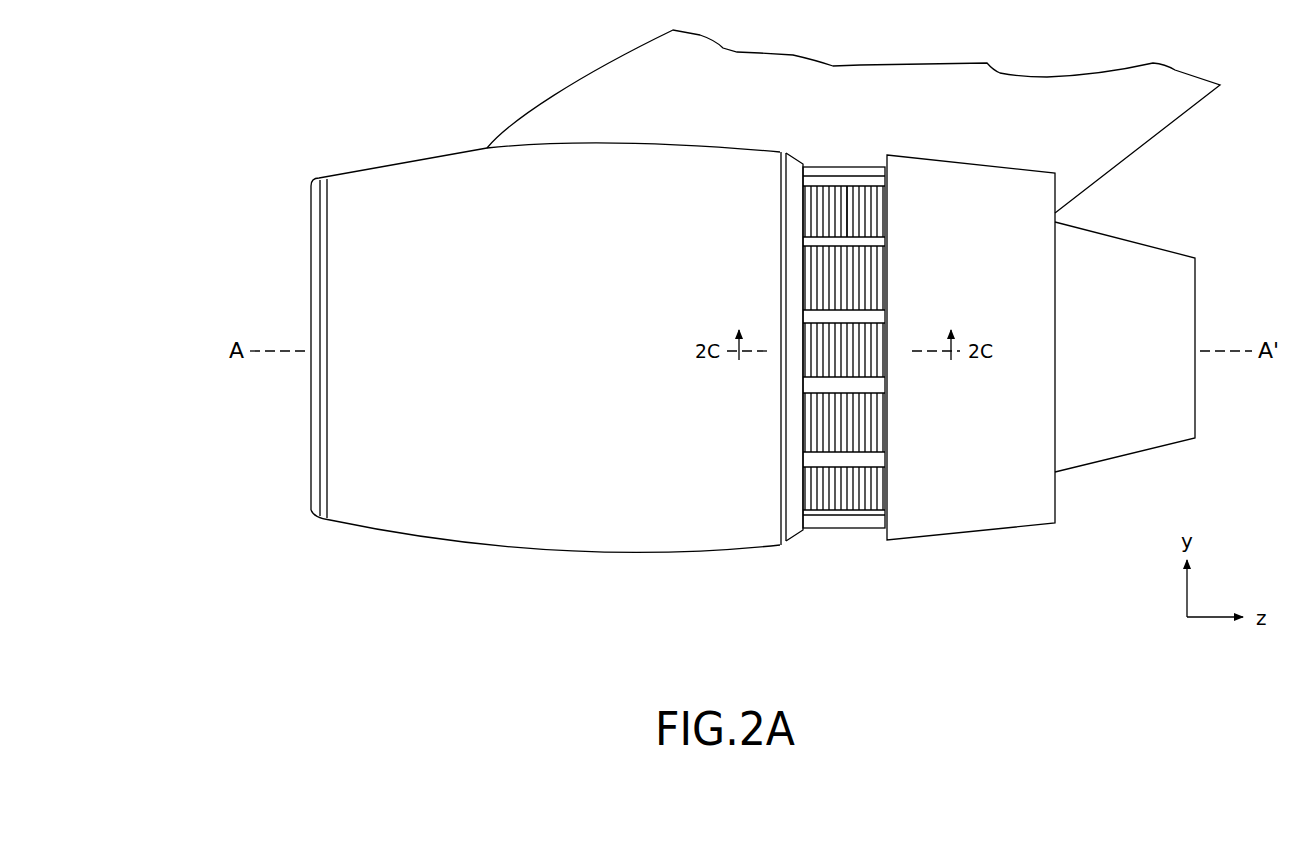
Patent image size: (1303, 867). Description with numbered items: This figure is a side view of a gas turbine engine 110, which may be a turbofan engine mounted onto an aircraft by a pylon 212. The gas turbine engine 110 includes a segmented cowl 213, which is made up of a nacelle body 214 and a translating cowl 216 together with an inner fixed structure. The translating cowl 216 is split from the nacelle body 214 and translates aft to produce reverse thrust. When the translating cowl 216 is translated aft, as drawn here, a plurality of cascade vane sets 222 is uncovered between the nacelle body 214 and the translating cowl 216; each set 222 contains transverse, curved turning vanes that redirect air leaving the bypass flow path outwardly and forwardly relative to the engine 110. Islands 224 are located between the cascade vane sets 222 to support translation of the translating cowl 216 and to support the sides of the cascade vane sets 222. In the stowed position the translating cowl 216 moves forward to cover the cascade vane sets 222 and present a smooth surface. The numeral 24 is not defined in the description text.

The gas turbine engine 110 is at (432, 92).
The pylon 212 is at (1000, 130).
The nacelle body 214 is at (668, 555).
The segmented cowl 213 is at (802, 551).
The thrust reverser cascade 24 is at (846, 167).
The cascade vane sets 222 is at (823, 420).
The islands 224 is at (855, 240).
The translating cowl 216 is at (947, 534).